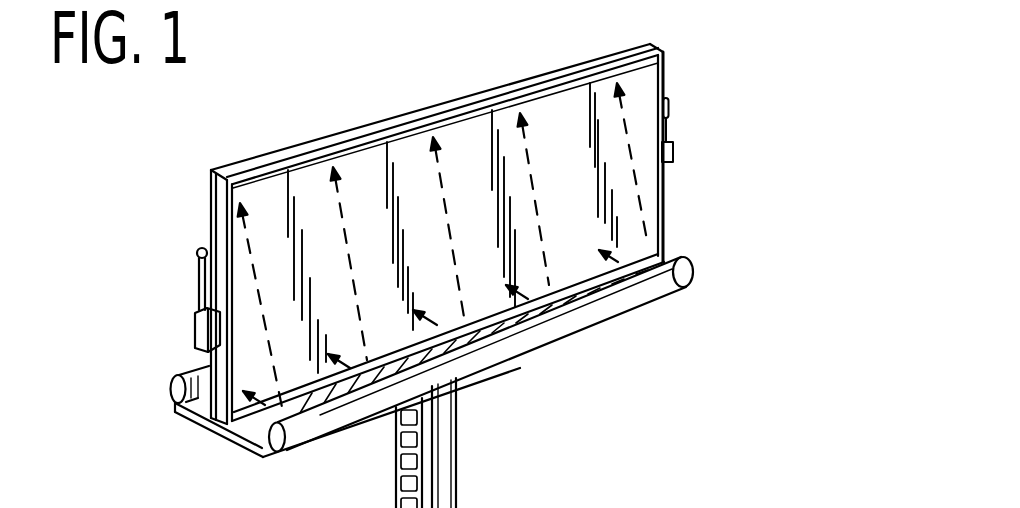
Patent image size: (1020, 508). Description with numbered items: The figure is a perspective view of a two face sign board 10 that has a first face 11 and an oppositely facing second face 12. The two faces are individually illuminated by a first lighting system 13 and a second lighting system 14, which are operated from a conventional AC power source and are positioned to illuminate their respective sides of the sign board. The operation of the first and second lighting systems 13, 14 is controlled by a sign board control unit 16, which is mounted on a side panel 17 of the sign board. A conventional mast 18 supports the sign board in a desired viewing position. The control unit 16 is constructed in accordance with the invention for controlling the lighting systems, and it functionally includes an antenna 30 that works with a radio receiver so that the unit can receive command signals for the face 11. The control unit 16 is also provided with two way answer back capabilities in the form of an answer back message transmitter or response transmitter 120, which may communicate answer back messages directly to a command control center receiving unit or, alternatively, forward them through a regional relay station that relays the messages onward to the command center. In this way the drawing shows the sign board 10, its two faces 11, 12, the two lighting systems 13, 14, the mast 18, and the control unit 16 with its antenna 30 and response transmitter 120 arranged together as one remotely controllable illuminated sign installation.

The two face sign board 10 is at (429, 273).
The first face 11 is at (398, 225).
The second face 12 is at (213, 193).
The first lighting system 13 is at (620, 290).
The second lighting system 14 is at (180, 390).
The sign board control unit 16 is at (200, 327).
The side panel 17 is at (223, 223).
The mast 18 is at (450, 458).
The antenna 30 is at (198, 287).
The response transmitter 120 is at (675, 154).